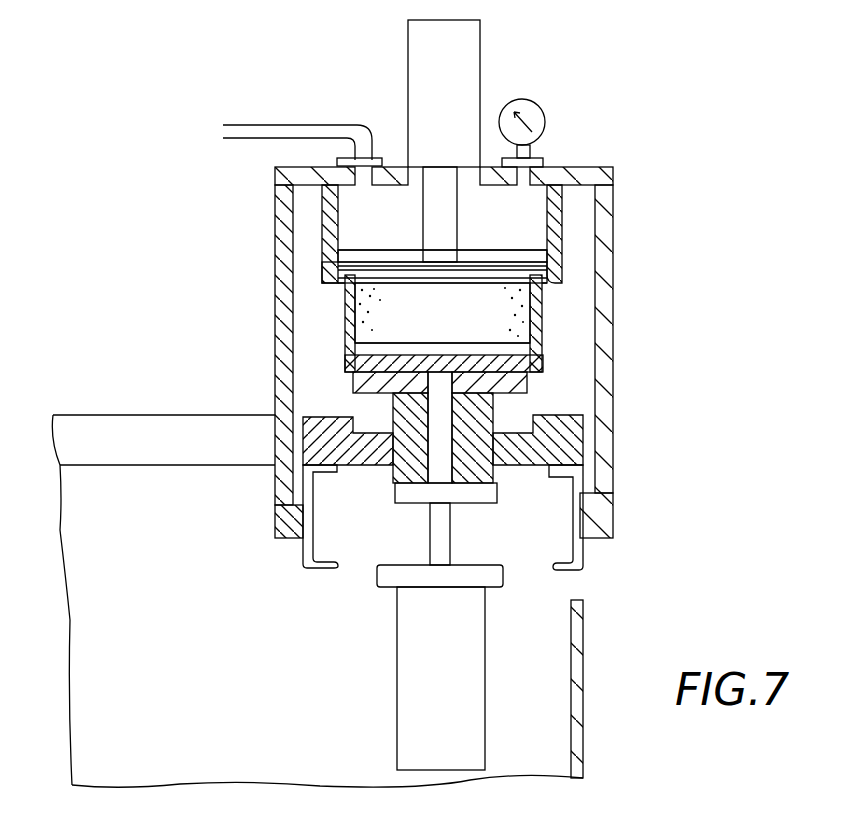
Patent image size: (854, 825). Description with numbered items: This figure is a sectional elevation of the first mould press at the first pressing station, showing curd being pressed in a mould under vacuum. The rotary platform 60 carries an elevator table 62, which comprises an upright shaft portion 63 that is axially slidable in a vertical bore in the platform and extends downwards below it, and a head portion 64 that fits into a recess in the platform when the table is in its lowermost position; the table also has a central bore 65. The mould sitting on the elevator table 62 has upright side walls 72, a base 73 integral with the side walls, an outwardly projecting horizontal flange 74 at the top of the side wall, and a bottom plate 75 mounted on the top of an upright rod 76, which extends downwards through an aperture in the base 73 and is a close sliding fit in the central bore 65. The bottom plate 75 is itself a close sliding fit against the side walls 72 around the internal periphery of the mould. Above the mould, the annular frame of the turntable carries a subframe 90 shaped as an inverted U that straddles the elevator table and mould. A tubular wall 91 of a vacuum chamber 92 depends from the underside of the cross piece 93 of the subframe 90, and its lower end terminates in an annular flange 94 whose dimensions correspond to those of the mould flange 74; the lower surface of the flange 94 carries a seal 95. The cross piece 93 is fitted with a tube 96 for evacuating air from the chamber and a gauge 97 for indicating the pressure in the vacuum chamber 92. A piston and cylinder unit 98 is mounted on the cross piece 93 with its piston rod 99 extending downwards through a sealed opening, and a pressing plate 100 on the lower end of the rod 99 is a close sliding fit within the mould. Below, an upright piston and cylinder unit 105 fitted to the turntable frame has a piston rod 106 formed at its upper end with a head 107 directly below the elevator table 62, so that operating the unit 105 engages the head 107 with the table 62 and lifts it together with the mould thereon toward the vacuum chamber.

The rotary platform 60 is at (597, 457).
The elevator table 62 is at (392, 393).
The shaft portion 63 is at (495, 415).
The head portion 64 is at (510, 380).
The central bore 65 is at (313, 510).
The side walls 72 is at (345, 320).
The base 73 is at (540, 360).
The horizontal flange 74 is at (322, 283).
The bottom plate 75 is at (405, 345).
The upright rod 76 is at (437, 403).
The subframe 90 is at (613, 232).
The tubular wall 91 is at (585, 203).
The vacuum chamber 92 is at (563, 210).
The cross piece 93 is at (394, 165).
The annular flange 94 is at (347, 250).
The seal 95 is at (322, 268).
The tube 96 is at (277, 128).
The gauge 97 is at (547, 122).
The piston and cylinder unit 98 is at (458, 88).
The piston rod 99 is at (445, 227).
The pressing plate 100 is at (490, 288).
The piston and cylinder unit 105 is at (483, 643).
The piston rod 106 is at (455, 505).
The head 107 is at (278, 507).